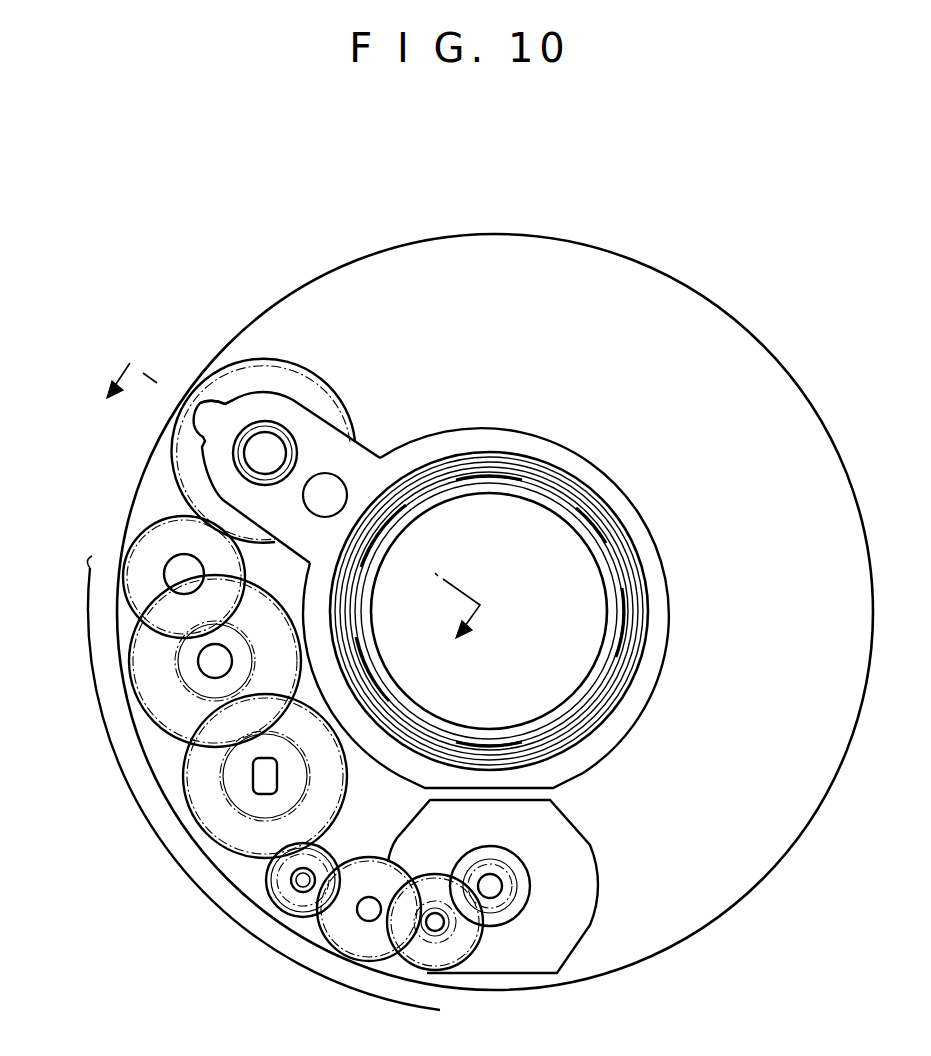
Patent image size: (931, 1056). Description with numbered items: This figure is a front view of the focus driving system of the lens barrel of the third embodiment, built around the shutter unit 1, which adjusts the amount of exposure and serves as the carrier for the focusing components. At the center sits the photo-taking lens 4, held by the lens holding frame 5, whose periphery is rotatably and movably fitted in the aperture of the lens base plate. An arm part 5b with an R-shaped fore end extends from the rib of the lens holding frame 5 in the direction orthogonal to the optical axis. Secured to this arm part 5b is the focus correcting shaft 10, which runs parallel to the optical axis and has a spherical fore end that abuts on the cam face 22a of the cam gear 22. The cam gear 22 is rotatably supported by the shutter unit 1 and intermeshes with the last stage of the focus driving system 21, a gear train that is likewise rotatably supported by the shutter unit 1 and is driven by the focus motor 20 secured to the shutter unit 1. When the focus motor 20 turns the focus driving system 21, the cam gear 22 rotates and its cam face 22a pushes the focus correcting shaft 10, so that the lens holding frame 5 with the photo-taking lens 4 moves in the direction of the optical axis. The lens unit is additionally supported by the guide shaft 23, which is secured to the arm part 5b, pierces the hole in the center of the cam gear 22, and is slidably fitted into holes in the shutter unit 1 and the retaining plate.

The shutter unit 1 is at (585, 277).
The photo-taking lens 4 is at (560, 537).
The lens holding frame 5 is at (580, 453).
The arm part 5b is at (197, 428).
The focus correcting shaft 10 is at (335, 488).
The focus motor 20 is at (570, 942).
The focus driving system 21 is at (155, 832).
The cam gear 22 is at (274, 362).
The cam face 22a is at (233, 382).
The guide shaft 23 is at (258, 463).